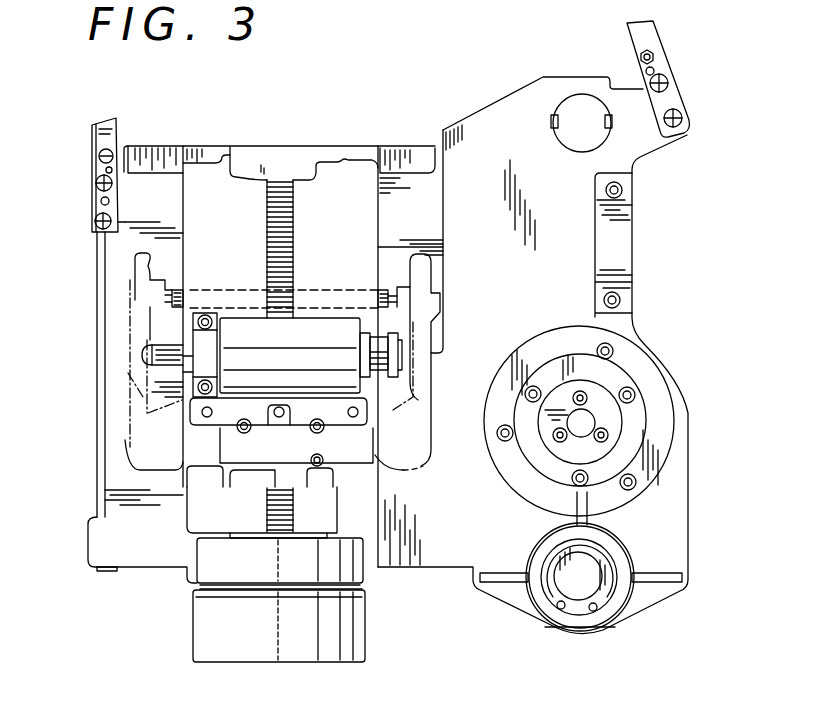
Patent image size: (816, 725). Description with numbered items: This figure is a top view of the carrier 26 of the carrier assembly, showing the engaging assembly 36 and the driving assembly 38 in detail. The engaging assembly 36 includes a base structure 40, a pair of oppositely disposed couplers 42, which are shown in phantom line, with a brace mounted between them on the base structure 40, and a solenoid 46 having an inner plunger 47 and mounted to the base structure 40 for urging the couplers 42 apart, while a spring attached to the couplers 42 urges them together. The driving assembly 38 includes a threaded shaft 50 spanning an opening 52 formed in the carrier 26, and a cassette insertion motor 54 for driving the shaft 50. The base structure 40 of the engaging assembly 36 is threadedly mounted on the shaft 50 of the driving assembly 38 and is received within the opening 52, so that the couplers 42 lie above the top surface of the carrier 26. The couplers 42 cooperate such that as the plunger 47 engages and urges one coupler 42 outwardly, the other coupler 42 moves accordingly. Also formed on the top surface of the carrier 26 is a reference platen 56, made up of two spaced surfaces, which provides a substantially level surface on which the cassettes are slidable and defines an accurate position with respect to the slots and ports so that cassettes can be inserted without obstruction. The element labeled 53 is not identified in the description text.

The carrier 26 is at (655, 520).
The engaging assembly 36 is at (106, 420).
The driving assembly 38 is at (165, 656).
The base structure 40 is at (338, 452).
The couplers 42 is at (128, 373).
The solenoid 46 is at (250, 378).
The plunger 47 is at (168, 343).
The threaded shaft 50 is at (297, 201).
The opening 52 is at (206, 197).
The guide block 53 is at (417, 160).
The cassette insertion motor 54 is at (340, 630).
The reference platen 56 is at (146, 210).